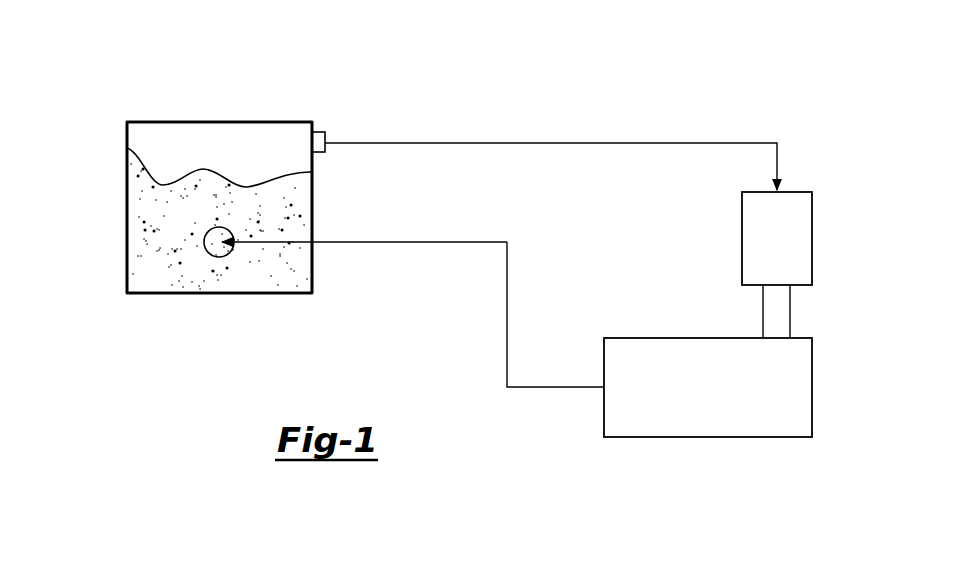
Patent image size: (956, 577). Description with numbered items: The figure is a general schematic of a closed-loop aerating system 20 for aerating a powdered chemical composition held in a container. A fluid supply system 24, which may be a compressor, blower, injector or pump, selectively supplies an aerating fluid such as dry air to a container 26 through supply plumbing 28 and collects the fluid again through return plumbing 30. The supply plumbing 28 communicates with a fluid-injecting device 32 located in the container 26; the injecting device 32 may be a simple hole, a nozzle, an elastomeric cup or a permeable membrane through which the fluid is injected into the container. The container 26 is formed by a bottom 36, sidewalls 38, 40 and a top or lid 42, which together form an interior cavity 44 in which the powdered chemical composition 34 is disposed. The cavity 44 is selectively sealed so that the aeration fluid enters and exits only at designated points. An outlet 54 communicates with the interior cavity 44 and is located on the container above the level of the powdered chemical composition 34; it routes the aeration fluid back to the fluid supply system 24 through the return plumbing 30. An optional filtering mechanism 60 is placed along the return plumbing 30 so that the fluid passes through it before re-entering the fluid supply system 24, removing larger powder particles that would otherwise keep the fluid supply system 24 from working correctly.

The closed-loop aerating system 20 is at (565, 58).
The fluid supply system 24 is at (722, 398).
The container 26 is at (114, 296).
The supply plumbing 28 is at (507, 326).
The return plumbing 30 is at (525, 143).
The fluid-injecting device 32 is at (219, 258).
The powdered chemical composition 34 is at (127, 148).
The bottom 36 is at (172, 293).
The sidewall 38 is at (127, 220).
The sidewall 40 is at (312, 203).
The top or lid 42 is at (148, 122).
The interior cavity 44 is at (262, 150).
The outlet 54 is at (325, 134).
The filtering mechanism 60 is at (812, 233).